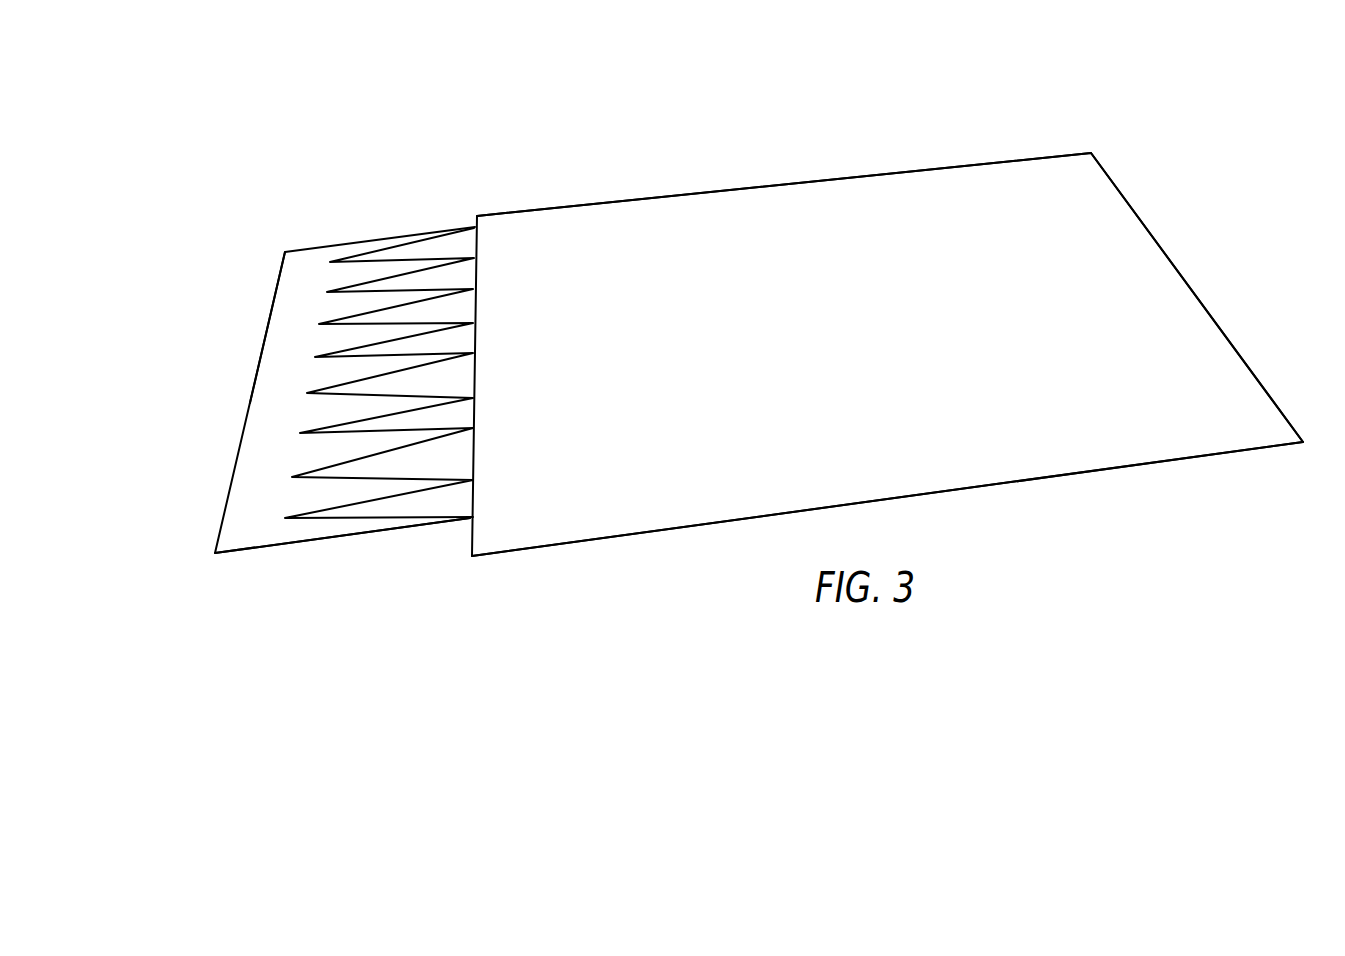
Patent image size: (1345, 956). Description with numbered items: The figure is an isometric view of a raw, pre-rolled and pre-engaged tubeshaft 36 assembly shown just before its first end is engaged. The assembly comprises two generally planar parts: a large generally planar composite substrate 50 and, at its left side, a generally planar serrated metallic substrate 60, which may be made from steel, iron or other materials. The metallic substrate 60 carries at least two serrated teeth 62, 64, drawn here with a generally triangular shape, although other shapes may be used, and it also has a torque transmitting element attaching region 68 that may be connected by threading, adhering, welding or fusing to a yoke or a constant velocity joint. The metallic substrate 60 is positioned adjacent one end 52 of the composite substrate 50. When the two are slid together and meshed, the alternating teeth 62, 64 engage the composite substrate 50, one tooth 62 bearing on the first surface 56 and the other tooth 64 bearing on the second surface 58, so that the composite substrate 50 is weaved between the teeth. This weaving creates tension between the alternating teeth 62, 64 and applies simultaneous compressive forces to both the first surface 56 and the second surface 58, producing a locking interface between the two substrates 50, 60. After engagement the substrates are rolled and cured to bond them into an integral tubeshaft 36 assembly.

The tubeshaft assembly 36 is at (796, 137).
The composite substrate 50 is at (962, 183).
The end of the composite substrate 52 is at (508, 235).
The first surface 56 is at (982, 455).
The second surface 58 is at (742, 522).
The serrated metallic substrate 60 is at (247, 417).
The serrated tooth 62 is at (350, 528).
The serrated tooth 64 is at (337, 498).
The torque transmitting element attaching region 68 is at (274, 384).